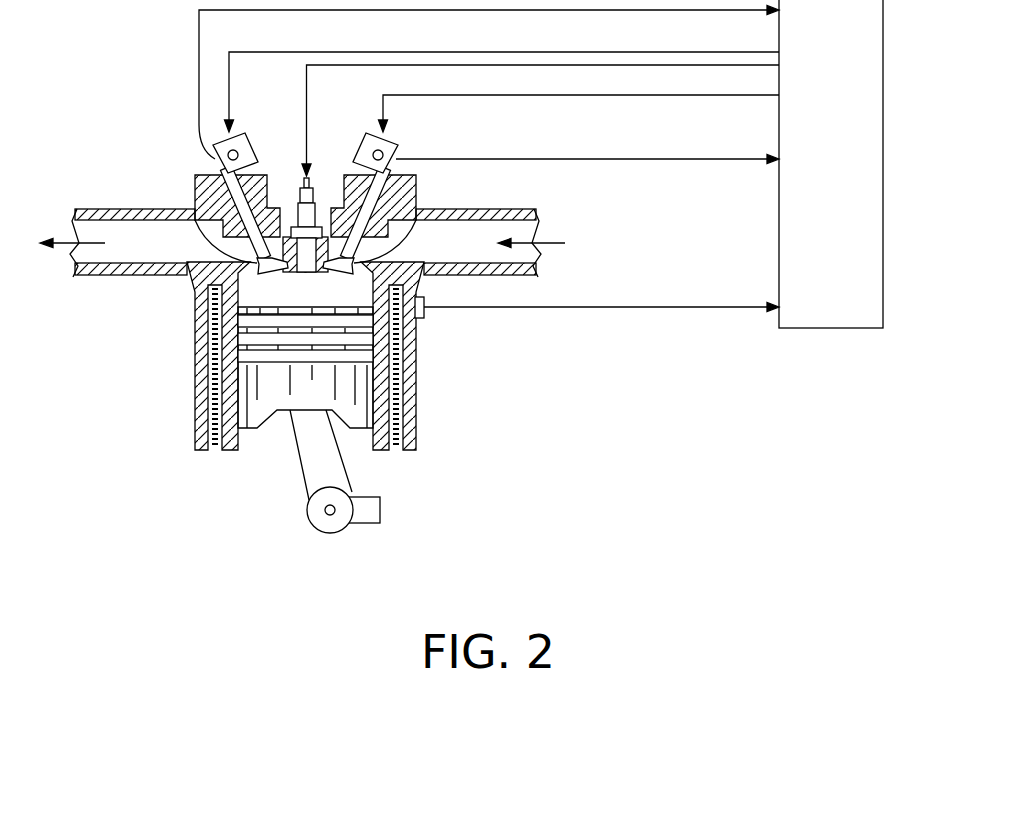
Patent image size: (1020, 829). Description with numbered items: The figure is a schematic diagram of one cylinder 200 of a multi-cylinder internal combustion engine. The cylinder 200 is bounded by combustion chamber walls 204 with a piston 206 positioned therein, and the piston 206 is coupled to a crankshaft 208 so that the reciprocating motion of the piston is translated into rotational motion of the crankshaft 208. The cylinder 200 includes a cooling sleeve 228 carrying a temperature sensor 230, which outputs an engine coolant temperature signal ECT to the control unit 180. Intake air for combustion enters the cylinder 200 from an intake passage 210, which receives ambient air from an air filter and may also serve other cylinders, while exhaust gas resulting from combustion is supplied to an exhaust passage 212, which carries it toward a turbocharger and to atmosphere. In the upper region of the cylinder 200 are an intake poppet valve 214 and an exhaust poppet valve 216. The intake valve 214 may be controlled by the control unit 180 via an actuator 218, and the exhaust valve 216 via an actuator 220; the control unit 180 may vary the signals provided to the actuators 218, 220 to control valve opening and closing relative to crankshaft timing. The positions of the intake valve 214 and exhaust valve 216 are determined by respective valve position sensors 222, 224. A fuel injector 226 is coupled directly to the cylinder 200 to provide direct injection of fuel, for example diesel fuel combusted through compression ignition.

The control unit 180 is at (811, 172).
The cylinder 200 is at (283, 301).
The combustion chamber walls 204 is at (238, 440).
The piston 206 is at (288, 398).
The crankshaft 208 is at (350, 497).
The intake passage 210 is at (428, 256).
The exhaust passage 212 is at (158, 256).
The intake poppet valve 214 is at (360, 258).
The exhaust poppet valve 216 is at (250, 258).
The actuator 218 is at (362, 136).
The actuator 220 is at (244, 136).
The valve position sensor 222 is at (399, 157).
The valve position sensor 224 is at (215, 159).
The fuel injector 226 is at (313, 195).
The cooling sleeve 228 is at (398, 397).
The temperature sensor 230 is at (424, 314).
The engine coolant temperature signal ECT is at (560, 308).